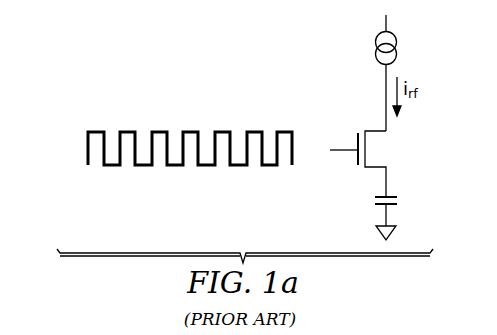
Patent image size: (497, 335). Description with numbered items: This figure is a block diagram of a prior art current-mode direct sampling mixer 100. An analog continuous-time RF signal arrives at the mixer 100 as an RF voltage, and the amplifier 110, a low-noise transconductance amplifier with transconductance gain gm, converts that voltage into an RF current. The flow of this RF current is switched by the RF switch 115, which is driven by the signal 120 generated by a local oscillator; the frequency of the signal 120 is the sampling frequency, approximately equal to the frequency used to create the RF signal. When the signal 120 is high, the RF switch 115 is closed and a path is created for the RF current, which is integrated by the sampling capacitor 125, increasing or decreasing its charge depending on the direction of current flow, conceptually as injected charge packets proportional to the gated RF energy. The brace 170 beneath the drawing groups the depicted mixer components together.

The current-mode direct sampling mixer 100 is at (136, 66).
The amplifier 110 is at (376, 44).
The RF switch 115 is at (353, 162).
The signal 120 is at (190, 130).
The sampling capacitor 125 is at (374, 200).
The brace indicating circuit portion 170 is at (269, 292).